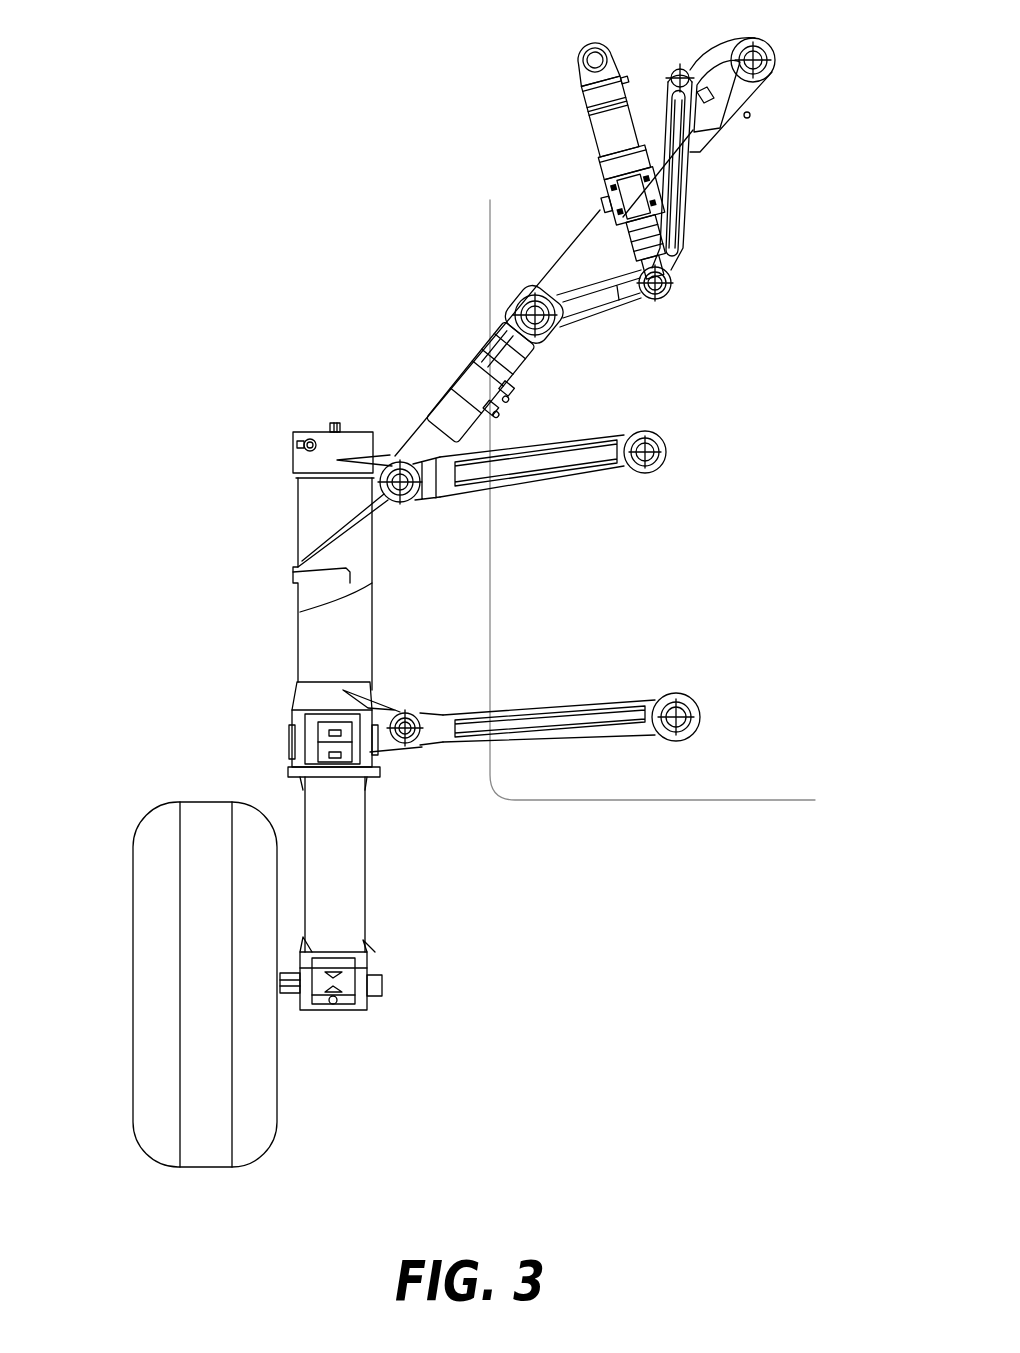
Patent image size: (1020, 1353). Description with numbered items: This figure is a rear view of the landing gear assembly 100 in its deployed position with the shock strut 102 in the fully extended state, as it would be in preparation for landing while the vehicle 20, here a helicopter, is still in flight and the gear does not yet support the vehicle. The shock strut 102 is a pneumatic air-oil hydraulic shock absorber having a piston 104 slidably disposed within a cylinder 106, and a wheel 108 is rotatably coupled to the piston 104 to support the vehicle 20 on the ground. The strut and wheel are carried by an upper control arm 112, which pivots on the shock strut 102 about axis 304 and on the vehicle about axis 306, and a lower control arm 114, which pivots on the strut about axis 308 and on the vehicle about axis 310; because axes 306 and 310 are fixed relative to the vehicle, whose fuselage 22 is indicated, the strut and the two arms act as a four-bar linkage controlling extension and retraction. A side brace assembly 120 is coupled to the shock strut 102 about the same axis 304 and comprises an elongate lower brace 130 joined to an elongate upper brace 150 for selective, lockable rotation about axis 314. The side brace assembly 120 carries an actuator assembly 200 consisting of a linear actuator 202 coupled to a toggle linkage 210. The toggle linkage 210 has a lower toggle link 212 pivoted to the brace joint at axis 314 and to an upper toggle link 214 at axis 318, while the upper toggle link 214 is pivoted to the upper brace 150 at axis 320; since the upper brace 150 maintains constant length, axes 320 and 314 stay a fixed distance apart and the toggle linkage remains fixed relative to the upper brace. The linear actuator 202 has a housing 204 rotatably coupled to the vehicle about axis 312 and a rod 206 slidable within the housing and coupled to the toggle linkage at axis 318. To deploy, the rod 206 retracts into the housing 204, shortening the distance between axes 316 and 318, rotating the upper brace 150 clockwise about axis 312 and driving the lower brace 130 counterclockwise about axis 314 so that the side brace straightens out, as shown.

The vehicle 20 is at (118, 650).
The fuselage 22 is at (742, 801).
The landing gear assembly 100 is at (405, 352).
The shock strut 102 is at (275, 722).
The piston 104 is at (355, 905).
The cylinder 106 is at (315, 630).
The wheel 108 is at (132, 1110).
The upper control arm 112 is at (540, 482).
The lower control arm 114 is at (558, 700).
The side brace assembly 120 is at (493, 330).
The lower brace 130 is at (465, 395).
The upper brace 150 is at (588, 245).
The actuator assembly 200 is at (574, 107).
The linear actuator 202 is at (641, 118).
The housing 204 is at (602, 137).
The rod 206 is at (652, 247).
The toggle linkage 210 is at (688, 238).
The lower toggle link 212 is at (612, 312).
The upper toggle link 214 is at (679, 168).
The axis 304 is at (412, 500).
The axis 306 is at (667, 448).
The axis 308 is at (418, 745).
The axis 310 is at (700, 713).
The axis 312 is at (764, 48).
The axis 314 is at (548, 326).
The axis 316 is at (582, 55).
The axis 318 is at (671, 287).
The axis 320 is at (681, 66).